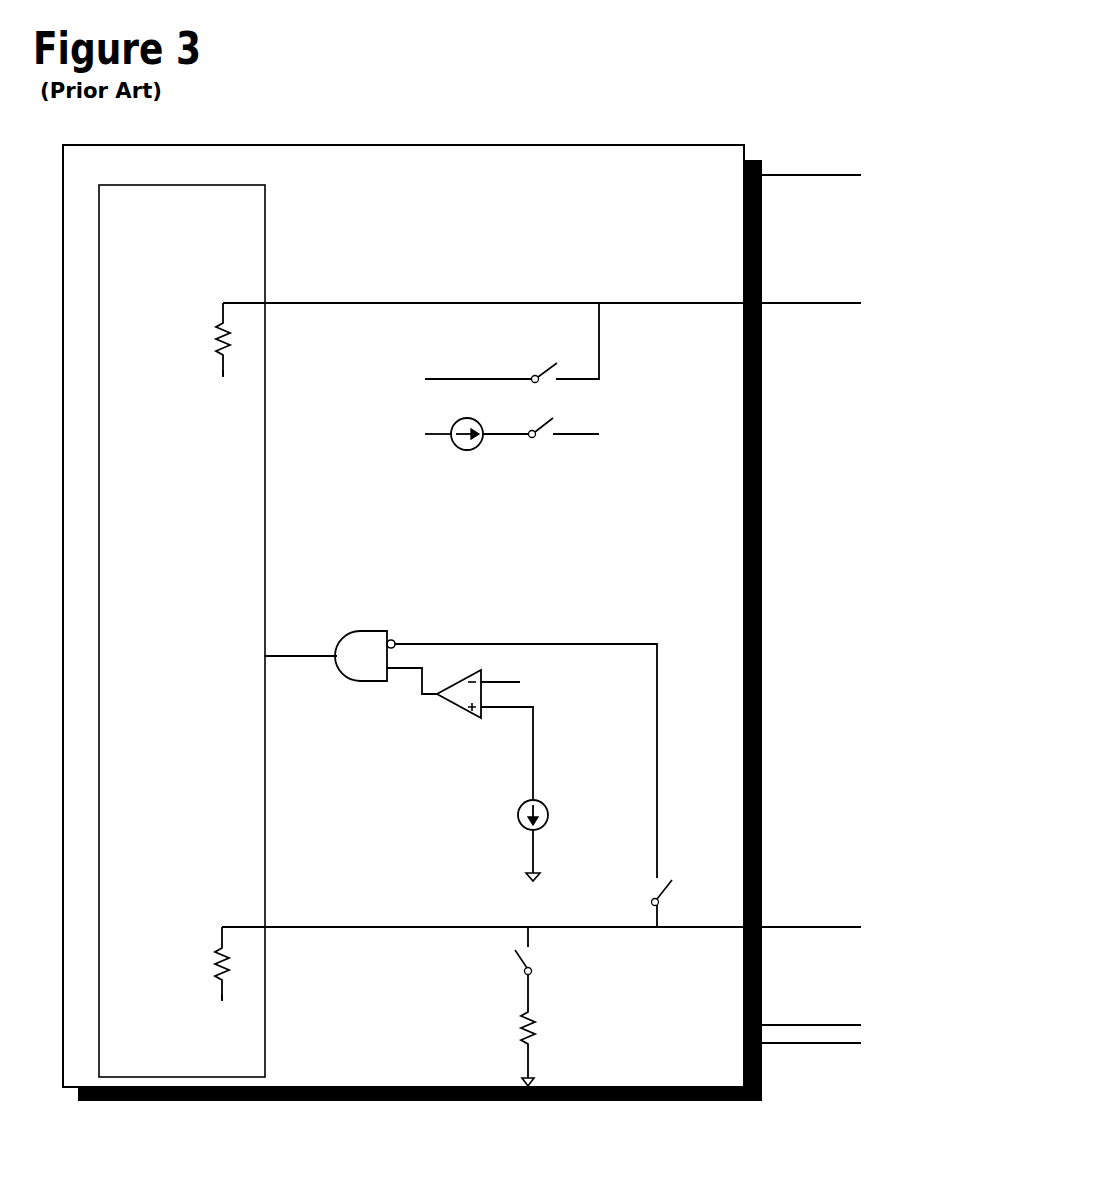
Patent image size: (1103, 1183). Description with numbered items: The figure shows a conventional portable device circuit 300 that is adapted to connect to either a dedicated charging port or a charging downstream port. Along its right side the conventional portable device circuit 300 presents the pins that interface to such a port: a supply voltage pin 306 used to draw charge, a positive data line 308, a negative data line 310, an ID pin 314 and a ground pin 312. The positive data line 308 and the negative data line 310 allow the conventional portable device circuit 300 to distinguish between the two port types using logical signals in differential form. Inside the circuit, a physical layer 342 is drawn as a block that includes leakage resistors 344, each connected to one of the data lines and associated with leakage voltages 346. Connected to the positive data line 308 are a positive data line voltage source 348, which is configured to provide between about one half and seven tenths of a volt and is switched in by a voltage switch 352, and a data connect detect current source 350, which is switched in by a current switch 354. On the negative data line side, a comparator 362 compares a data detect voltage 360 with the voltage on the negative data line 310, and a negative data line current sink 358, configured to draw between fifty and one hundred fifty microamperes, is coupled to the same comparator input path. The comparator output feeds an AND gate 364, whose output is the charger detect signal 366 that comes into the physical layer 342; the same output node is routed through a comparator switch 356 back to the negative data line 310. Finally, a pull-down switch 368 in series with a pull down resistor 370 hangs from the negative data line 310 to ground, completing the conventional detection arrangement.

The conventional portable device circuit 300 is at (730, 95).
The supply voltage pin 306 is at (805, 174).
The positive data line 308 is at (818, 302).
The negative data line 310 is at (813, 926).
The ground pin 312 is at (786, 1046).
The ID pin 314 is at (818, 1024).
The physical layer 342 is at (182, 631).
The leakage resistors 344 is at (215, 340).
The leakage voltages 346 is at (223, 377).
The positive data line voltage source 348 is at (426, 379).
The data connect detect current source 350 is at (470, 451).
The voltage switch 352 is at (533, 377).
The current switch 354 is at (533, 438).
The comparator switch 356 is at (652, 900).
The negative data line current sink 358 is at (518, 821).
The data detect voltage 360 is at (520, 682).
The comparator 362 is at (455, 706).
The AND gate 364 is at (370, 683).
The charger detect signal 366 is at (322, 656).
The pull-down switch 368 is at (523, 973).
The pull down resistor 370 is at (519, 1023).